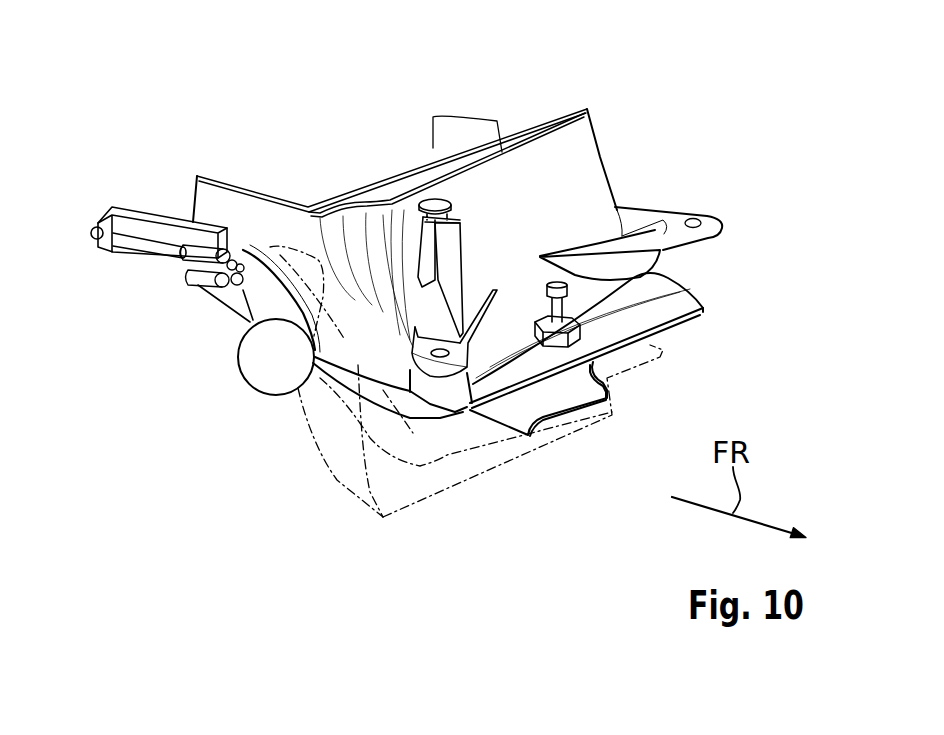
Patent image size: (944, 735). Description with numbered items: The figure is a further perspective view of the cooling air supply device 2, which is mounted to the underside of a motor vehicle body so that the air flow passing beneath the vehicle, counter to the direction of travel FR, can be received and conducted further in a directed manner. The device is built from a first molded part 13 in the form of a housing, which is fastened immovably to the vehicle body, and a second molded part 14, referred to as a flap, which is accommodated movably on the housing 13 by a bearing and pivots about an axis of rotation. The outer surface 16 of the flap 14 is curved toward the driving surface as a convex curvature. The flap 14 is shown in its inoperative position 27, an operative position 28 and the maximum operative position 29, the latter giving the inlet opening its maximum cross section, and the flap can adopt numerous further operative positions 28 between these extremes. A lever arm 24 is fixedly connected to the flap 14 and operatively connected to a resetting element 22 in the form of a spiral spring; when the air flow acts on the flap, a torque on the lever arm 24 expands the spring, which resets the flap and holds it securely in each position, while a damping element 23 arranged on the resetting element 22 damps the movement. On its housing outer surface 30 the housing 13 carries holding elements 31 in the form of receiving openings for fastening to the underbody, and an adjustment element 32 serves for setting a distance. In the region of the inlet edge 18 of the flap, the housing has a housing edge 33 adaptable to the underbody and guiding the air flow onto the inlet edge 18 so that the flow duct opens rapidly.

The cooling air supply device 2 is at (696, 96).
The first molded part 13 is at (583, 158).
The second molded part 14 is at (337, 431).
The outer surface 16 is at (339, 477).
The inlet edge 18 is at (572, 440).
The resetting element 22 is at (142, 203).
The damping element 23 is at (216, 298).
The lever arm 24 is at (262, 361).
The inoperative position 27 is at (452, 420).
The operative position 28 is at (423, 462).
The maximum operative position 29 is at (385, 526).
The housing outer surface 30 is at (531, 178).
The holding elements 31 is at (693, 220).
The adjustment element 32 is at (648, 275).
The housing edge 33 is at (690, 326).